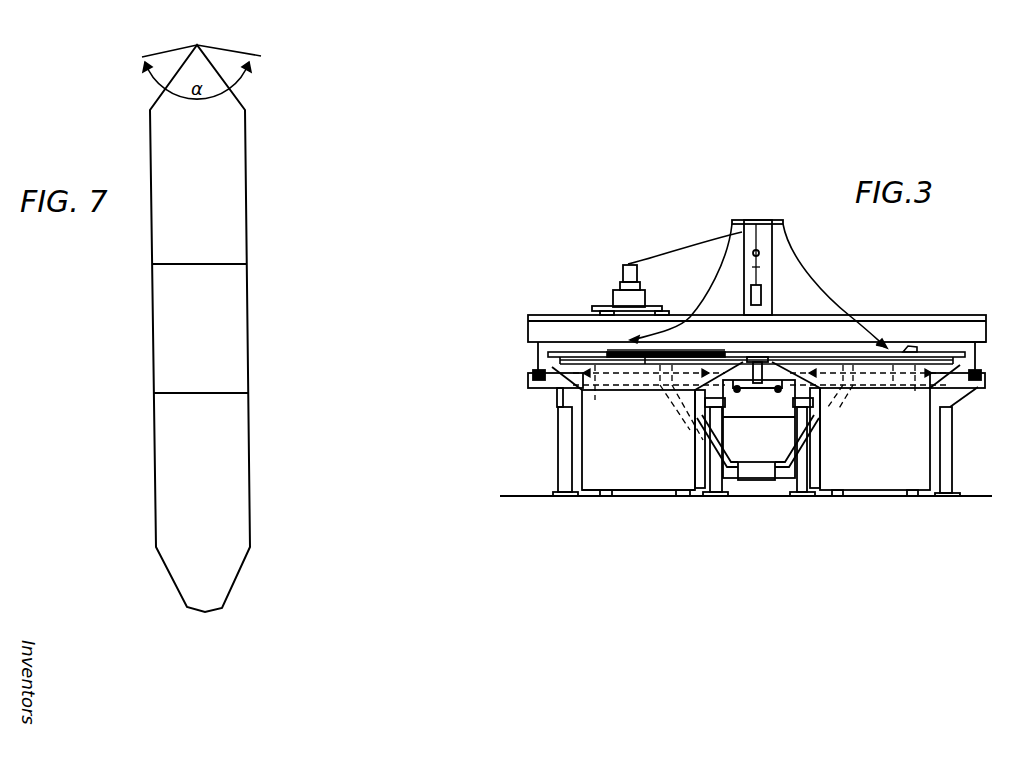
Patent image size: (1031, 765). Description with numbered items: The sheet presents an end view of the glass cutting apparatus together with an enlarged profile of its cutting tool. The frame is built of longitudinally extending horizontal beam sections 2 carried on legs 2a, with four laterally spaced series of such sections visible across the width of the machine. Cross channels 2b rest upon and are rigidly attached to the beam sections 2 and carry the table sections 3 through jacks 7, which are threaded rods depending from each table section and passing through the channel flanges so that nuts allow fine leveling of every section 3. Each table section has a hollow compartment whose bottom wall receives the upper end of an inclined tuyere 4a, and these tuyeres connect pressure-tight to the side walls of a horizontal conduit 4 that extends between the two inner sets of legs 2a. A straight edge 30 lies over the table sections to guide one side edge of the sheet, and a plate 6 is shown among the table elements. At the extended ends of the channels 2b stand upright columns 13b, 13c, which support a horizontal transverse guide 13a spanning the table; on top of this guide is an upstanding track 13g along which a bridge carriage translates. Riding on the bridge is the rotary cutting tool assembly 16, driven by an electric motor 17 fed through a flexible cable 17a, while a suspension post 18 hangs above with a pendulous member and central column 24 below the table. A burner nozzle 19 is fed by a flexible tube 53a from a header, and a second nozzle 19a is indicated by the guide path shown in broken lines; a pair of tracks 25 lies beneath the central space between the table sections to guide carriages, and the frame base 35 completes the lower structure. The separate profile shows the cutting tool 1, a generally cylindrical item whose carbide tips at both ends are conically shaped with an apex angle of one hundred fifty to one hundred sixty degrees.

In FIG. 7, the rotary scribing or cutting tool 1 is at (242, 173).
In FIG. 3, the horizontal beam sections 2 is at (563, 385).
In FIG. 3, the legs 2a is at (560, 455).
In FIG. 3, the cross beams or channels 2b is at (530, 379).
In FIG. 3, the table sections 3 is at (893, 372).
In FIG. 3, the conduit 4 is at (760, 480).
In FIG. 3, the pipe or tuyere 4a is at (707, 448).
In FIG. 3, the guide plate 6 is at (808, 352).
In FIG. 3, the jacks 7 is at (915, 372).
In FIG. 3, the horizontal transverse guide 13a is at (988, 333).
In FIG. 3, the upright column 13b is at (985, 357).
In FIG. 3, the upright column 13c is at (536, 352).
In FIG. 3, the track 13g is at (927, 317).
In FIG. 3, the rotary cutting or scribing tool assembly 16 is at (641, 299).
In FIG. 3, the electric motor 17 is at (625, 266).
In FIG. 3, the flexible cable 17a is at (675, 255).
In FIG. 3, the pendulum post 18 is at (763, 296).
In FIG. 3, the burner nozzle 19 is at (880, 344).
In FIG. 3, the burner nozzle 19a is at (633, 342).
In FIG. 3, the central column 24 is at (758, 357).
In FIG. 3, the tracks 25 is at (759, 429).
In FIG. 3, the straight edge 30 is at (910, 348).
In FIG. 3, the panel 35 is at (645, 482).
In FIG. 3, the flexible tube 53a is at (703, 303).